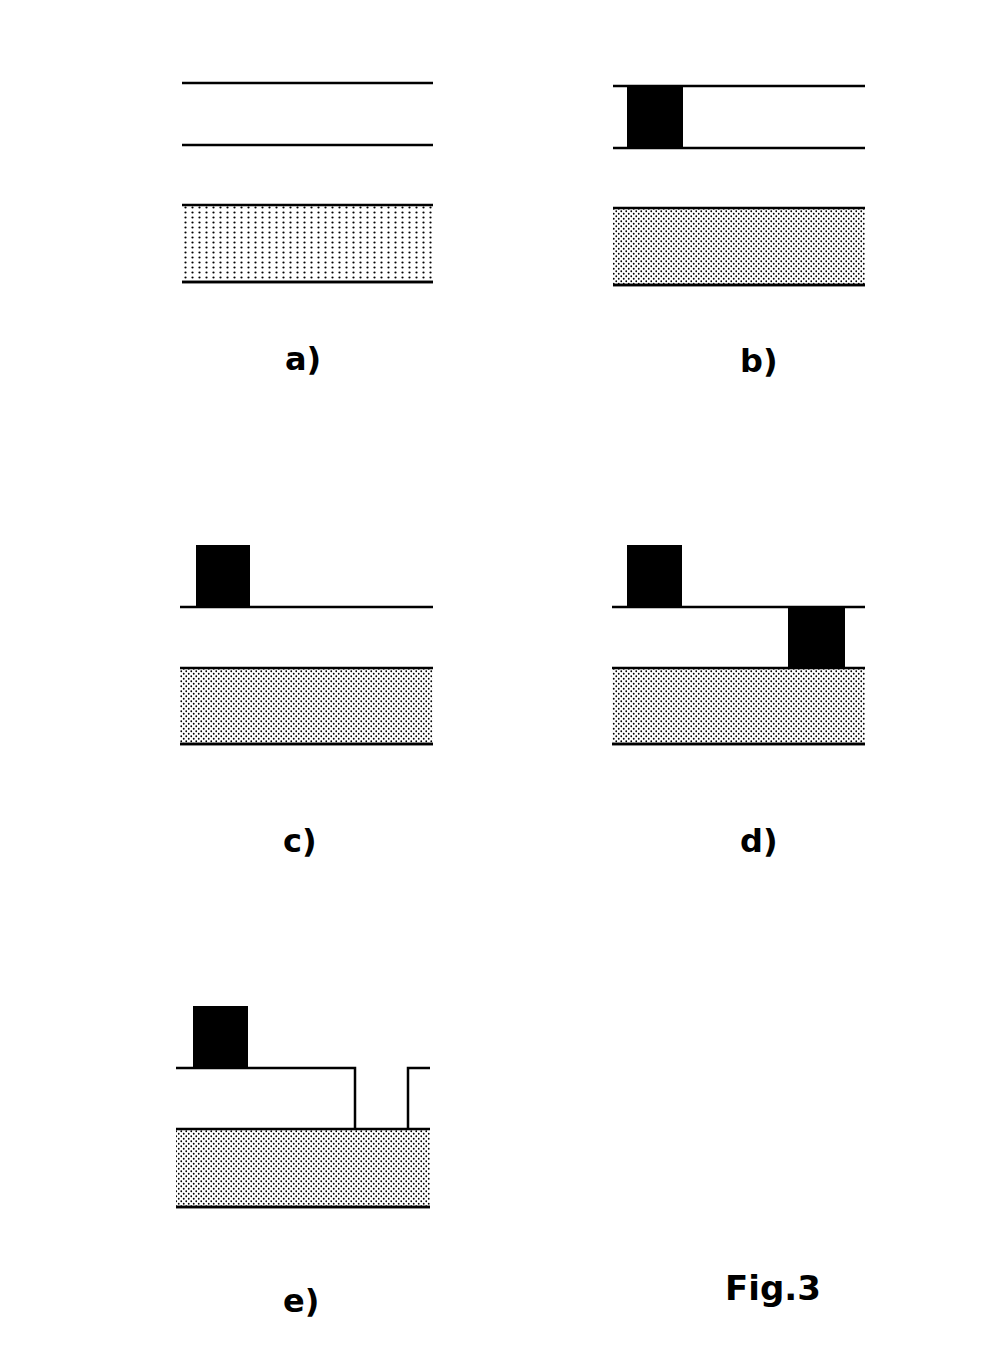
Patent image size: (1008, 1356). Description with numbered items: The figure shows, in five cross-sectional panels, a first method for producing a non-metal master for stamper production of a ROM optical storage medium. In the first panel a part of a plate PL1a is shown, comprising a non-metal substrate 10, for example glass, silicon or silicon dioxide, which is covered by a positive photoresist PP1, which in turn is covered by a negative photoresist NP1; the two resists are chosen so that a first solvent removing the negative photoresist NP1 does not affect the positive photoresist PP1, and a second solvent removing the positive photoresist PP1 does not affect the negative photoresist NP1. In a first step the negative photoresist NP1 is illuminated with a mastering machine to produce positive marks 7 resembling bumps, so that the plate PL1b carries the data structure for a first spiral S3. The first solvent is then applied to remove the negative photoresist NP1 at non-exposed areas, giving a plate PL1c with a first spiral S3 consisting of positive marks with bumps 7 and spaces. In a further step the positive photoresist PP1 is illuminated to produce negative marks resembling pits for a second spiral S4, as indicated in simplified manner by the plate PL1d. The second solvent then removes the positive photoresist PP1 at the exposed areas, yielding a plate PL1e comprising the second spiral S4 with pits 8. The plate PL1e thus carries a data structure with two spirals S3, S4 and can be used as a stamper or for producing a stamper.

The negative photoresist NP1 is at (193, 112).
The positive photoresist PP1 is at (198, 178).
The non-metal substrate 10 is at (197, 248).
The plate PL1a is at (252, 265).
The plate PL1b is at (678, 265).
The plate PL1c is at (245, 725).
The plate PL1d is at (675, 725).
The plate PL1e is at (242, 1187).
The first spiral S3 is at (658, 85).
The second spiral S4 is at (823, 607).
The positive marks 7 is at (438, 577).
The pits 8 is at (600, 868).